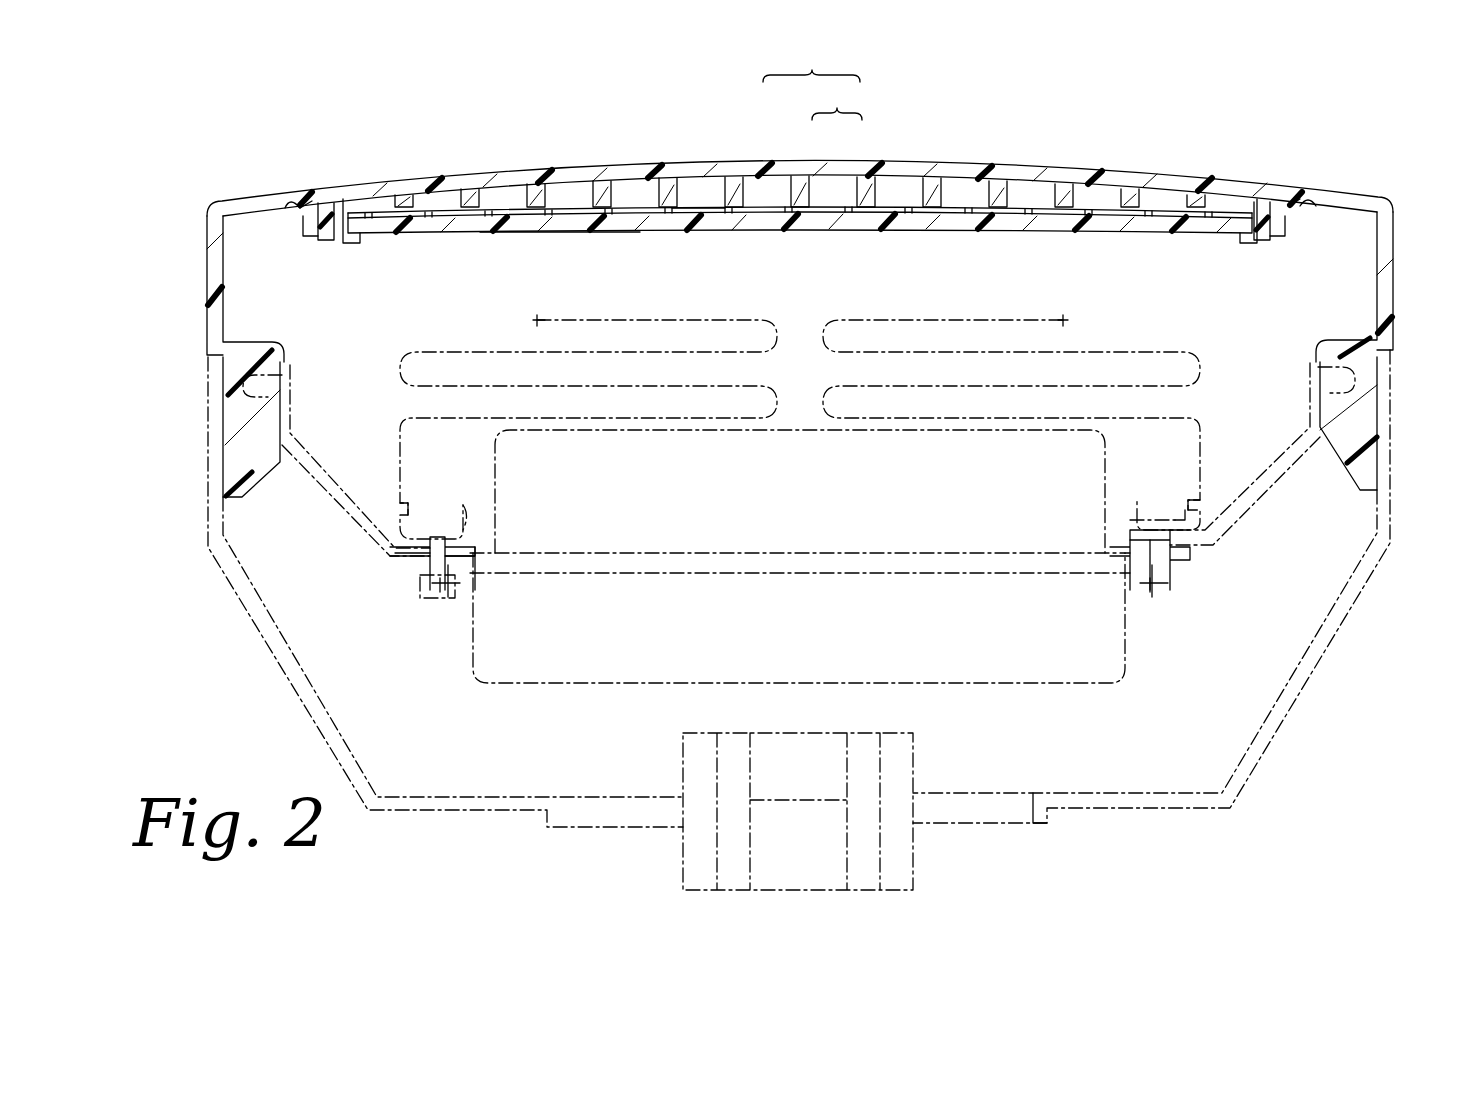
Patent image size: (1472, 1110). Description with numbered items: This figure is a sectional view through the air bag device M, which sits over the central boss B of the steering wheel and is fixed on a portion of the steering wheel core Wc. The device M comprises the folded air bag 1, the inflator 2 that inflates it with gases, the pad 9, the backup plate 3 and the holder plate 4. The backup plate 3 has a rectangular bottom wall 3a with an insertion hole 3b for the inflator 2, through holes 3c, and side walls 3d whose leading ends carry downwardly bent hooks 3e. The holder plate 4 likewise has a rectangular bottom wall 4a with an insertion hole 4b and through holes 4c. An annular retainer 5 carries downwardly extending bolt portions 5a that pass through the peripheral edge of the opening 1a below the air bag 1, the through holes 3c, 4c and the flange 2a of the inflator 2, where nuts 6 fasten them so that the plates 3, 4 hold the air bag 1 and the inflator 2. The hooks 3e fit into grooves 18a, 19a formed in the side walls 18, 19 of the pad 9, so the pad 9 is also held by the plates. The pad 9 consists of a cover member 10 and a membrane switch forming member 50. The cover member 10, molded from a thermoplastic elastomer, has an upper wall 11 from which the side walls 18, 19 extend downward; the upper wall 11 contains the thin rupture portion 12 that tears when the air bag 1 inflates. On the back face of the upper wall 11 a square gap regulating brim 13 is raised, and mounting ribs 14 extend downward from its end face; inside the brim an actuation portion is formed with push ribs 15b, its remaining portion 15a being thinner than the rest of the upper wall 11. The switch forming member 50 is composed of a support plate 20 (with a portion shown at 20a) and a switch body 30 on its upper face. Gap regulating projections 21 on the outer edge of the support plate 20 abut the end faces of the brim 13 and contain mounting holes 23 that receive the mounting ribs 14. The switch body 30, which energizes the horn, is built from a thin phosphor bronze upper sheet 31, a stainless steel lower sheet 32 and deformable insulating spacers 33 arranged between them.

The air bag 1 is at (1142, 348).
The opening 1a is at (463, 525).
The inflator 2 is at (580, 685).
The flange 2a is at (418, 578).
The backup plate 3 is at (344, 506).
The bottom wall 3a is at (470, 545).
The insertion hole 3b is at (1128, 530).
The through holes 3c is at (1160, 525).
The side walls 3d is at (300, 433).
The hooks 3e is at (295, 375).
The holder plate 4 is at (420, 560).
The bottom wall 4a is at (410, 556).
The insertion hole 4b is at (1118, 552).
The through holes 4c is at (1185, 560).
The retainer 5 is at (408, 508).
The bolt portions 5a is at (438, 595).
The nuts 6 is at (450, 598).
The pad 9 is at (811, 66).
The cover member 10 is at (786, 165).
The upper wall 11 is at (622, 178).
The rupture portion 12 is at (290, 200).
The gap regulating brim 13 is at (310, 200).
The mounting ribs 14 is at (325, 210).
The remaining portion 15a is at (962, 178).
The push ribs 15b is at (1003, 182).
The side wall 18 is at (206, 272).
The groove 18a is at (278, 360).
The side wall 19 is at (1395, 280).
The groove 19a is at (1333, 348).
The support plate 20 is at (858, 215).
The heater plate electrode 20a is at (730, 228).
The gap regulating projections 21 is at (304, 225).
The mounting holes 23 is at (362, 240).
The switch body 30 is at (823, 205).
The upper sheet 31 is at (503, 204).
The lower sheet 32 is at (556, 234).
The insulating spacers 33 is at (562, 204).
The membrane switch forming member 50 is at (837, 104).
The air bag device M is at (1128, 678).
The core Wc is at (915, 745).
The central boss B is at (918, 878).